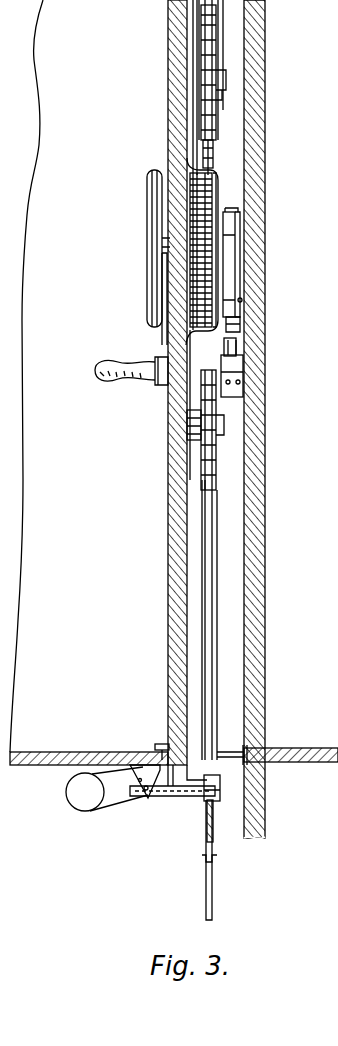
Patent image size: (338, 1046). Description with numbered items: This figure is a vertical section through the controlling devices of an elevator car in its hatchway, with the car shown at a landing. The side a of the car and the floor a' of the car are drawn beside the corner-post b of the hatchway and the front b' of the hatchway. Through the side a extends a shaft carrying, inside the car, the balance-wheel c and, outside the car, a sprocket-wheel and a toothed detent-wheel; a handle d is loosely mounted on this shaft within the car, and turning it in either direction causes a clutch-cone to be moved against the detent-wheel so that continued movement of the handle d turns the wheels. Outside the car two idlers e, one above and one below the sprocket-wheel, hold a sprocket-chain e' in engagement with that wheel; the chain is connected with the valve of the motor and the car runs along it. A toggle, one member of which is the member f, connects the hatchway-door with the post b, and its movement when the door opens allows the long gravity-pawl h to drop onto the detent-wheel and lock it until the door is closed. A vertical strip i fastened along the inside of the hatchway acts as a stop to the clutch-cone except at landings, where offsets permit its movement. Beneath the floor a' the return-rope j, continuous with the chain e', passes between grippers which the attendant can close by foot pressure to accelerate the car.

The side of the car a is at (151, 382).
The floor of the car a' is at (89, 740).
The corner-post of the hatchway b is at (268, 419).
The front of the hatchway b' is at (262, 371).
The balance-wheel c is at (150, 272).
The handle d is at (172, 348).
The idlers e is at (244, 245).
The sprocket-chain e' is at (252, 145).
The toggle member f is at (238, 322).
The gravity-pawl h is at (333, 765).
The vertical strip i is at (214, 643).
The return-rope j is at (213, 818).